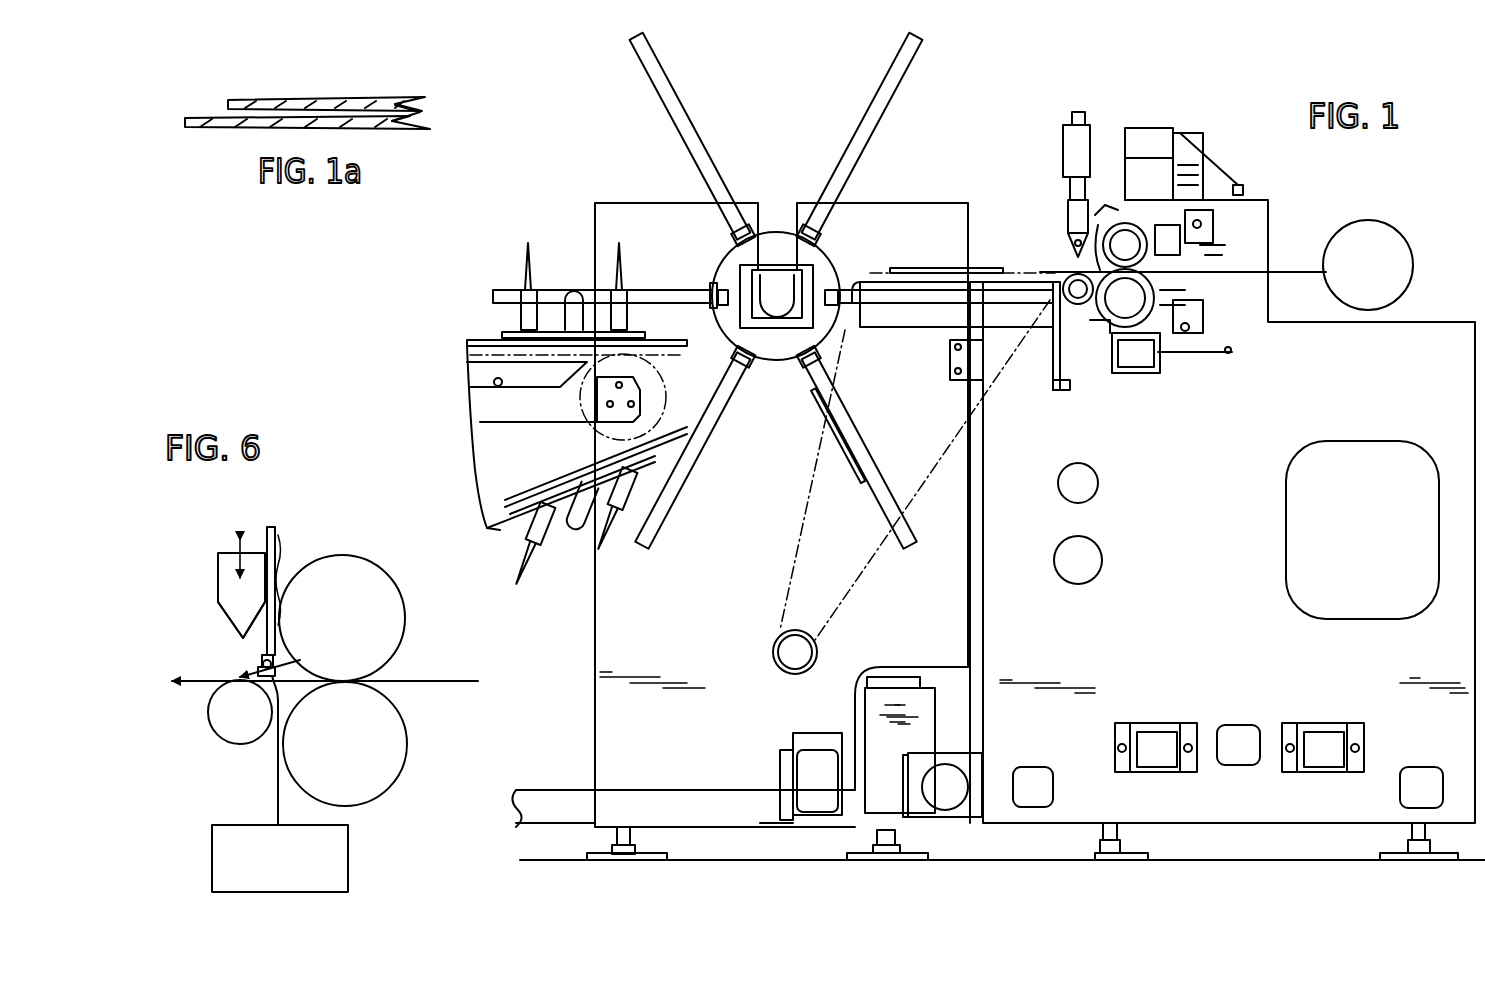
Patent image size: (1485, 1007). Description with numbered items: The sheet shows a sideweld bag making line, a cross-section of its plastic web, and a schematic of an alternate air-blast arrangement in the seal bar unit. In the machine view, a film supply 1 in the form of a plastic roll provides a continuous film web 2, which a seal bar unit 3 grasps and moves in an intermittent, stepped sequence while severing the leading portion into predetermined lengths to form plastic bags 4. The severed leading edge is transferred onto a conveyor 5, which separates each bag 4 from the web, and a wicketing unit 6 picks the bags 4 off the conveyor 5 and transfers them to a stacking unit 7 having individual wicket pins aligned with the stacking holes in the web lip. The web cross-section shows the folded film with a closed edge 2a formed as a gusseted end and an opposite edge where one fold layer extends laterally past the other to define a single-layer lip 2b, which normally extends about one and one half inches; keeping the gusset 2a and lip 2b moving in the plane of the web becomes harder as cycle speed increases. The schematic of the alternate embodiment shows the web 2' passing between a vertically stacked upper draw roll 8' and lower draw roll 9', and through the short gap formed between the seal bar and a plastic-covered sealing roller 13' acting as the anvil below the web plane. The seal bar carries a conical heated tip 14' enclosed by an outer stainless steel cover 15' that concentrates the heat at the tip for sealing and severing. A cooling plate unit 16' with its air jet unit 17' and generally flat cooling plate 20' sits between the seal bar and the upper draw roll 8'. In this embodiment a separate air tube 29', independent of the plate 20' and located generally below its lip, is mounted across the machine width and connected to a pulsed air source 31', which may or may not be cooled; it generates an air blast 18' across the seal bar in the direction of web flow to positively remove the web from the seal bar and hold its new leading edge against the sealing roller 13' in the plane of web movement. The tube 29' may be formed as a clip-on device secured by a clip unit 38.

In FIG. 1, the film supply 1 is at (1392, 228).
In FIG. 1, the film web 2 is at (1178, 250).
In FIG. 1a, the closed edge (gusset) 2a is at (420, 128).
In FIG. 1a, the lip 2b is at (218, 128).
In FIG. 1, the seal bar unit 3 is at (1103, 130).
In FIG. 1a, the plastic bag 4 is at (340, 95).
In FIG. 1, the plastic bag 4 is at (938, 267).
In FIG. 1, the conveyor 5 is at (924, 300).
In FIG. 1, the wicketing unit 6 is at (779, 418).
In FIG. 1, the stacking unit 7 is at (568, 255).
In FIG. 6, the upper draw roll 8' is at (369, 618).
In FIG. 6, the lower draw roll 9' is at (365, 744).
In FIG. 6, the sealing roller 13' is at (232, 734).
In FIG. 6, the conical heated tip 14' is at (212, 620).
In FIG. 6, the outer stainless steel cover 15' is at (214, 589).
In FIG. 6, the cooling plate unit 16' is at (286, 559).
In FIG. 6, the air jet unit 17' is at (310, 660).
In FIG. 6, the air blast 18' is at (224, 661).
In FIG. 6, the cooling plate 20' is at (314, 561).
In FIG. 6, the air tube 29' is at (308, 636).
In FIG. 6, the pulsed air source 31' is at (251, 784).
In FIG. 6, the clip unit 38 is at (280, 645).
In FIG. 6, the film web 2' is at (339, 665).